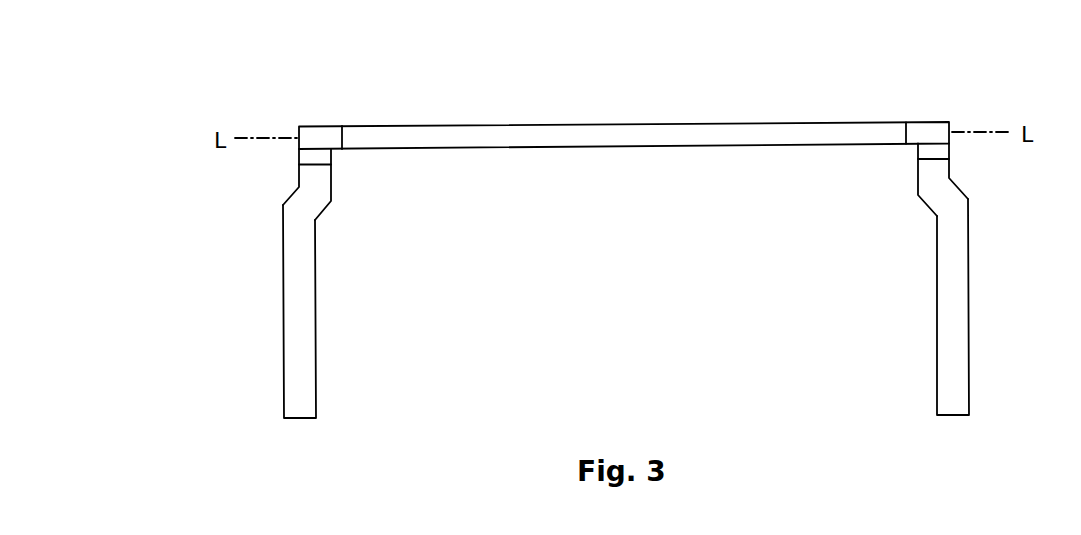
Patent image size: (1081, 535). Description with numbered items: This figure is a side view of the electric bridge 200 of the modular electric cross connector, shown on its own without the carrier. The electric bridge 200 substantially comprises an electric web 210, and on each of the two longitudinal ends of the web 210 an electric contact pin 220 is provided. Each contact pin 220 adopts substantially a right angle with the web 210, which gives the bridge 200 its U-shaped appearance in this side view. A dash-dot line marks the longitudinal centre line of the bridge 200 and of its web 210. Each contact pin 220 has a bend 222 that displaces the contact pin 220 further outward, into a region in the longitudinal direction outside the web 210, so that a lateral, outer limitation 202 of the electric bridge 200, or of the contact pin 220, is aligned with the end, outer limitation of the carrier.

The electric bridge 200 is at (203, 68).
The electric web 210 is at (712, 133).
The lateral, outer limitation 202 is at (282, 341).
The electric contact pin 220 is at (305, 377).
The bend 222 is at (307, 202).